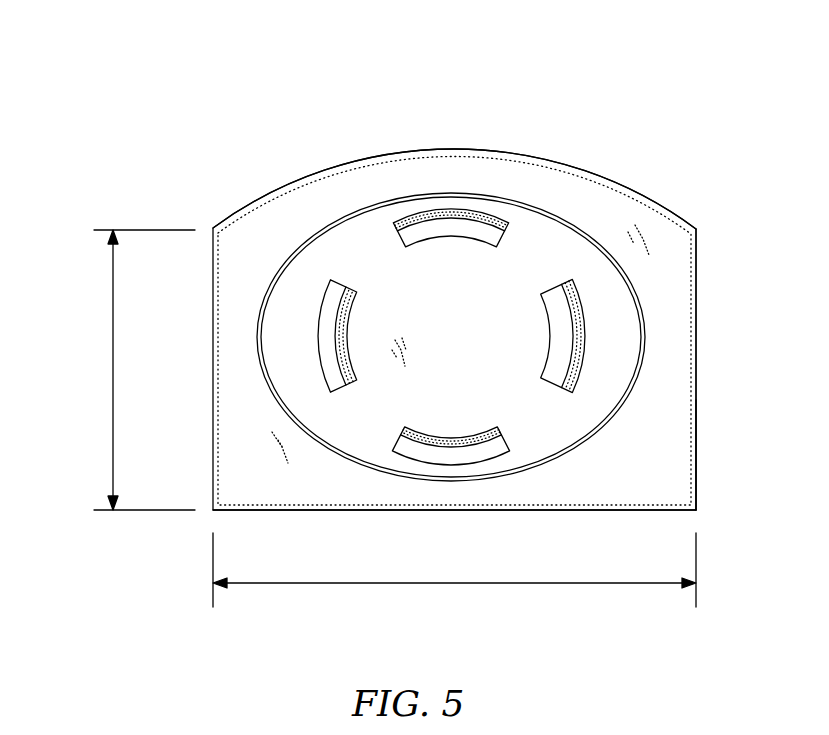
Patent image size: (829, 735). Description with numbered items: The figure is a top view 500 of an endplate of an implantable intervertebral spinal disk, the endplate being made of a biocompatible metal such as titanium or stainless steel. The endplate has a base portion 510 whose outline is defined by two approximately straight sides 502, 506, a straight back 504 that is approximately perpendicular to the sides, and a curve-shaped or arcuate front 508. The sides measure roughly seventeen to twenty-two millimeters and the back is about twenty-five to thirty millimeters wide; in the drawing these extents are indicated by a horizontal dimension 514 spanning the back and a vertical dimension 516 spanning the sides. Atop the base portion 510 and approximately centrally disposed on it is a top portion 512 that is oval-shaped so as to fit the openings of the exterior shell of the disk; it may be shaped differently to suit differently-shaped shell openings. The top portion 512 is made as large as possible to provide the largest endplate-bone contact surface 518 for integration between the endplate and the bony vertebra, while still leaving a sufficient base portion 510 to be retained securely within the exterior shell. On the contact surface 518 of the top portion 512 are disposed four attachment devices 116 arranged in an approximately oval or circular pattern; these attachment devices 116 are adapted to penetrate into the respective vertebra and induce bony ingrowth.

The top view 500 is at (535, 46).
The straight side 502 is at (213, 357).
The straight back 504 is at (411, 512).
The straight side 506 is at (697, 289).
The arcuate front 508 is at (592, 174).
The base portion 510 is at (698, 447).
The top portion 512 is at (646, 335).
The width 514 is at (449, 585).
The height 516 is at (112, 353).
The endplate-bone contact surface 518 is at (471, 343).
The attachment devices 116 is at (334, 282).